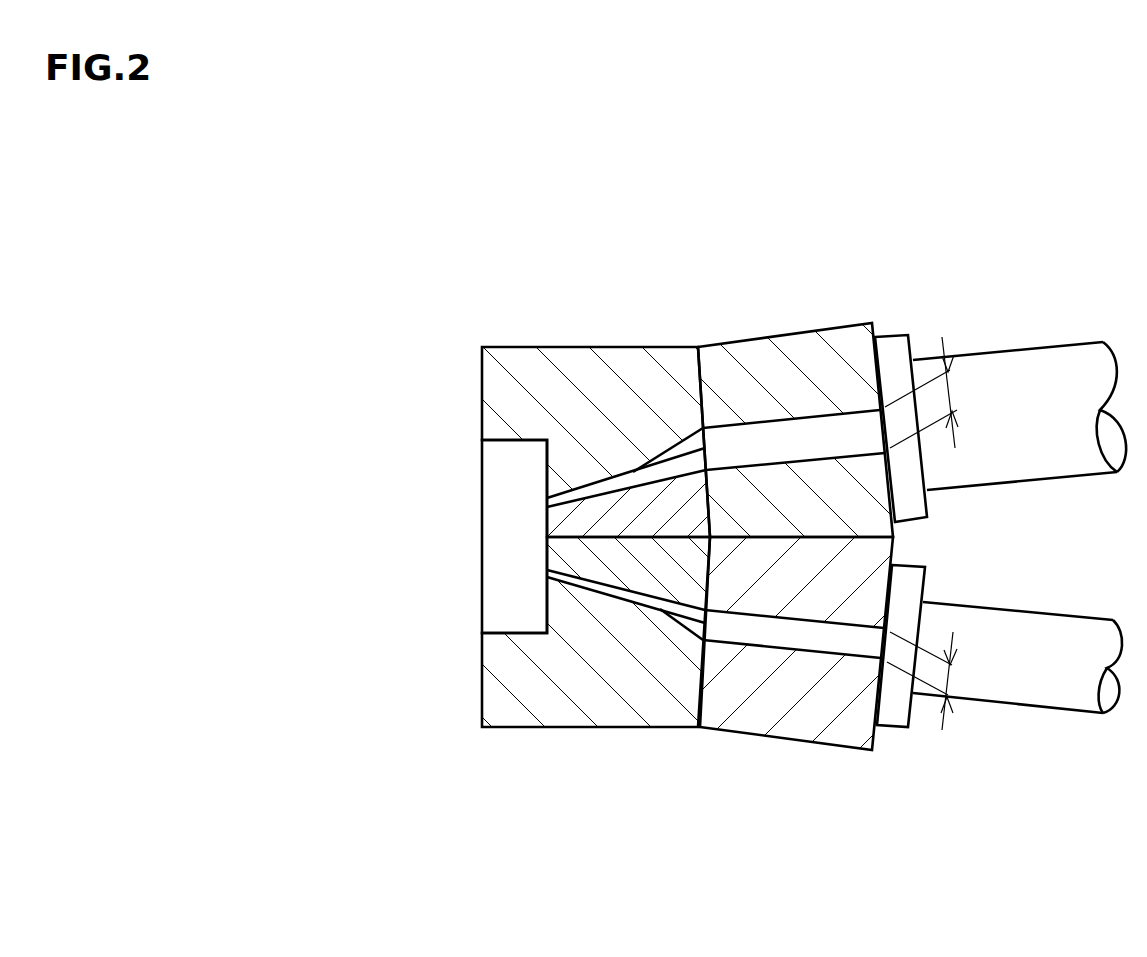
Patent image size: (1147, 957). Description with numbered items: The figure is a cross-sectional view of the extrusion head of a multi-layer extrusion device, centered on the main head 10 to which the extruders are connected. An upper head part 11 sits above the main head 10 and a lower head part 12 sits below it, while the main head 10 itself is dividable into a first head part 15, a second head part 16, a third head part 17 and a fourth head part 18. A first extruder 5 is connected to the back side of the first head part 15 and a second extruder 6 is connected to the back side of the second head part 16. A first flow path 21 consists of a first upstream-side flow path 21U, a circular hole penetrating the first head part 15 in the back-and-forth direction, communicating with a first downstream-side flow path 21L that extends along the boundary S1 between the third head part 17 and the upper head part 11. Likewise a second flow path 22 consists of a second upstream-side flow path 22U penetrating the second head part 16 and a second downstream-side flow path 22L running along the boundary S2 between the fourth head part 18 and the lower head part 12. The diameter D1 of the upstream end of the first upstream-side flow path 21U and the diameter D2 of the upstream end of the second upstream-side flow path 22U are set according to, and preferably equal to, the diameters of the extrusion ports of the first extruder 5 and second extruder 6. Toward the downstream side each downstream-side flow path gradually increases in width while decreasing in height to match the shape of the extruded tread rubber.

The main head 10 is at (838, 320).
The upper head part 11 is at (510, 403).
The lower head part 12 is at (510, 670).
The first head part 15 is at (790, 380).
The second head part 16 is at (823, 708).
The third head part 17 is at (583, 520).
The fourth head part 18 is at (583, 555).
The first flow path 21 is at (758, 252).
The first downstream-side flow path 21L is at (690, 437).
The first upstream-side flow path 21U is at (752, 440).
The second flow path 22 is at (758, 820).
The second downstream-side flow path 22L is at (655, 605).
The second upstream-side flow path 22U is at (753, 633).
The boundary between the third head part and the upper head part S1 is at (590, 480).
The boundary between the fourth head part and the lower head part S2 is at (600, 598).
The first extruder 5 is at (1048, 343).
The second extruder 6 is at (1050, 710).
The diameter of the upstream end of the first upstream-side flow path D1 is at (950, 387).
The diameter of the upstream end of the second upstream-side flow path D2 is at (948, 683).